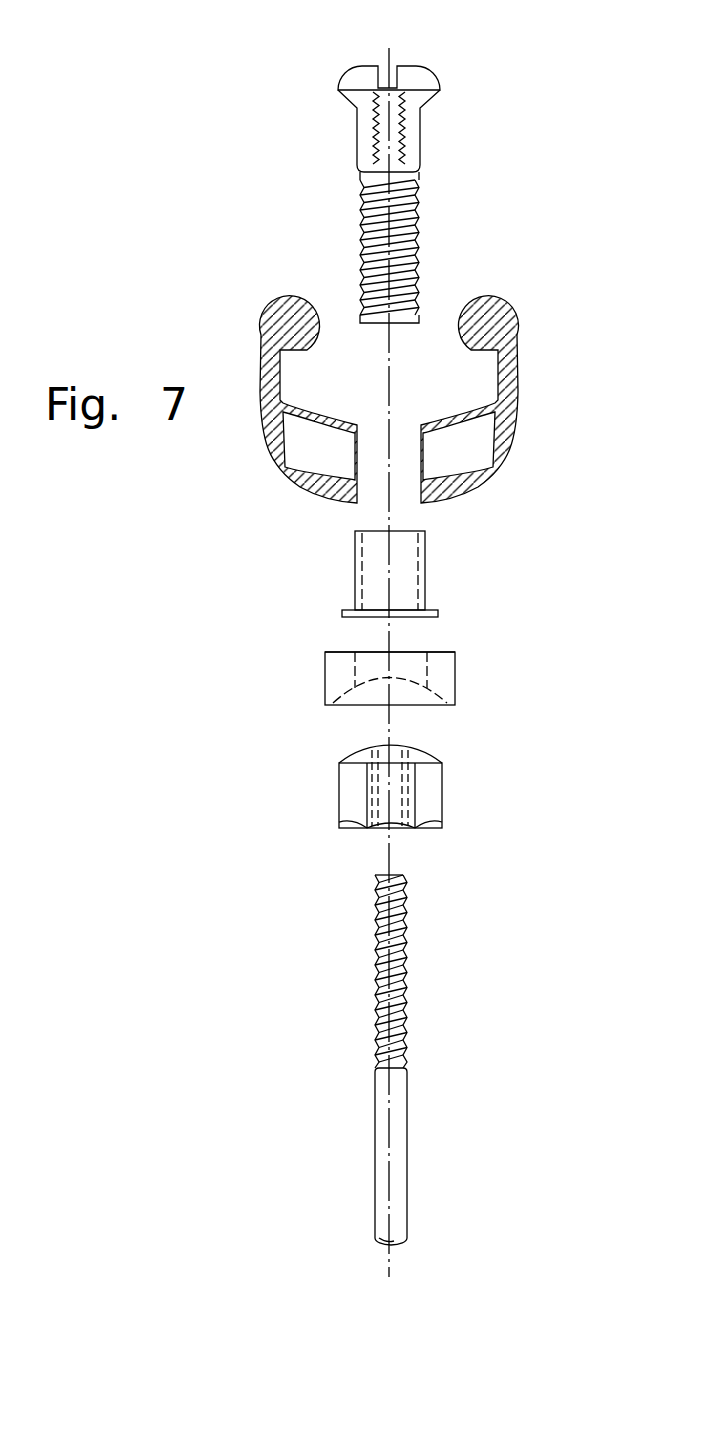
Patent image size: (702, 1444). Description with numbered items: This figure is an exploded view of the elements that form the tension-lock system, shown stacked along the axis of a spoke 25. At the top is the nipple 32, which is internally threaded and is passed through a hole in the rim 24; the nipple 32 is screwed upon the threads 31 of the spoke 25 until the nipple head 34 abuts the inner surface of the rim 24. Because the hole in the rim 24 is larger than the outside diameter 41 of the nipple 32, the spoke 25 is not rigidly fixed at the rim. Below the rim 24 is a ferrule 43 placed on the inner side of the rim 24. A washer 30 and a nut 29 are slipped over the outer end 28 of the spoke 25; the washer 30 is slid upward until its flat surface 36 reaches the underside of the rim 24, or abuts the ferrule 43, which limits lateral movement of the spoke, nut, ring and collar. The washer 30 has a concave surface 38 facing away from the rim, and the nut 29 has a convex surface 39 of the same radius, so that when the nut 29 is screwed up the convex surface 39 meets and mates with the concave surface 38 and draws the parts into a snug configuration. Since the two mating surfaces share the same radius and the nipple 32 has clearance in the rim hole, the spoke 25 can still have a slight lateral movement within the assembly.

The nipple head 34 is at (437, 72).
The nipple 32 is at (413, 127).
The outside diameter 41 is at (355, 133).
The rim 24 is at (518, 387).
The ferrule 43 is at (403, 575).
The flat surface 36 is at (440, 652).
The washer 30 is at (442, 673).
The concave surface 38 is at (375, 683).
The convex surface 39 is at (428, 753).
The nut 29 is at (428, 802).
The outer end 28 is at (413, 971).
The threads 31 is at (378, 978).
The spoke 25 is at (383, 1135).